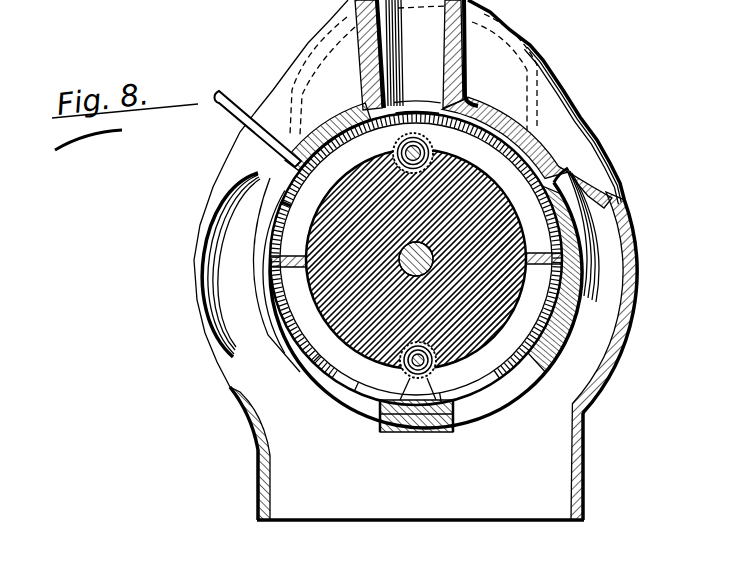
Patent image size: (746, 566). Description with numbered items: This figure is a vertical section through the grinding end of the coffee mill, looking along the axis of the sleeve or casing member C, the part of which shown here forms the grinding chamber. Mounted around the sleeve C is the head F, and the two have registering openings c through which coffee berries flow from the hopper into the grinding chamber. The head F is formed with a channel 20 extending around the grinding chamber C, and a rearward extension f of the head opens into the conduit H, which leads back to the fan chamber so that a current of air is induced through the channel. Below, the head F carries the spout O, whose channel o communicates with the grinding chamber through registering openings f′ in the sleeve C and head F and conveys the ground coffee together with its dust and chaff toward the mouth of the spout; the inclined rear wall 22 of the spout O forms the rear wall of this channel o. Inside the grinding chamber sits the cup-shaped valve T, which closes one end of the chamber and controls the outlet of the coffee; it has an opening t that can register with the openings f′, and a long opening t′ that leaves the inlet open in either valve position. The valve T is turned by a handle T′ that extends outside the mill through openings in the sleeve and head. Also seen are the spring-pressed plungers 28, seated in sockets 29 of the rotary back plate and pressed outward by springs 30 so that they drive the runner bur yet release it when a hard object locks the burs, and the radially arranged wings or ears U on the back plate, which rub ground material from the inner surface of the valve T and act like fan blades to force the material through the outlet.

The conduit H is at (493, 67).
The rearward extension f is at (540, 77).
The registering openings c is at (455, 94).
The long opening t′ is at (412, 110).
The plungers 28 is at (395, 150).
The sockets 29 is at (428, 148).
The springs 30 is at (432, 155).
The channel 20 is at (425, 261).
The wings or ears U is at (577, 220).
The valve T is at (527, 342).
The head F is at (613, 364).
The sleeve or casing member C is at (533, 372).
The opening t is at (327, 397).
The registering openings f′ is at (350, 400).
The channel o is at (358, 453).
The spout O is at (585, 473).
The rear wall 22 is at (497, 512).
The handle T′ is at (250, 108).